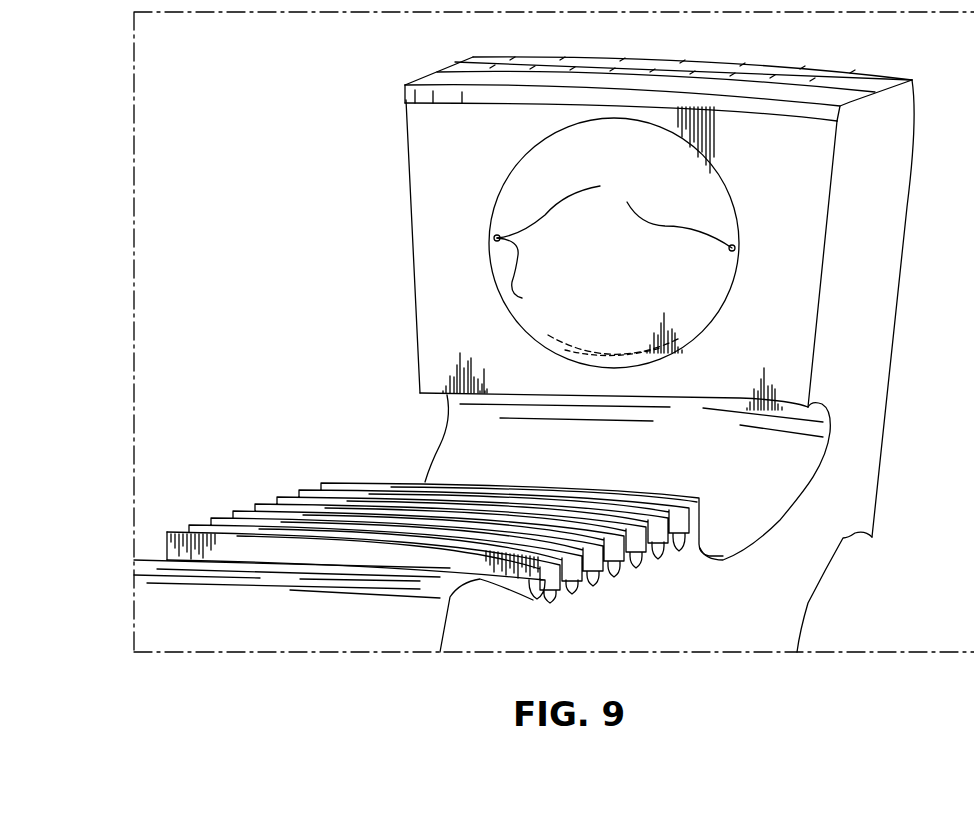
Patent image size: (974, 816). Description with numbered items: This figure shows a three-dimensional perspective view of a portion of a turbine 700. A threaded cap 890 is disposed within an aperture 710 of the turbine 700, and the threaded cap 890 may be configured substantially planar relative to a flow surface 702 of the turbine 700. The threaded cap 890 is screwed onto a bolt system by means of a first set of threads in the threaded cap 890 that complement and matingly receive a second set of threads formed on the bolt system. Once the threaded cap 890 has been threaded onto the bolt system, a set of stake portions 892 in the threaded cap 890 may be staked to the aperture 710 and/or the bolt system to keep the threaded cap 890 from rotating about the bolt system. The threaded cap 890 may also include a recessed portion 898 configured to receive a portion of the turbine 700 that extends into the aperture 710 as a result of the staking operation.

The turbine 700 is at (865, 232).
The flow surface 702 is at (786, 362).
The aperture 710 is at (625, 320).
The threaded cap 890 is at (637, 262).
The set of stake portions 892 is at (614, 215).
The recessed portion 898 is at (530, 277).